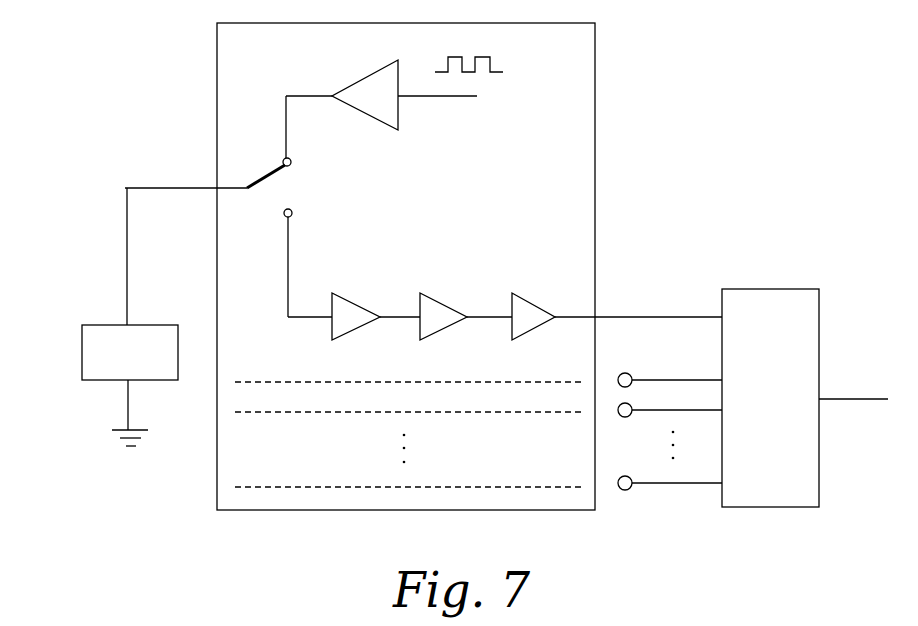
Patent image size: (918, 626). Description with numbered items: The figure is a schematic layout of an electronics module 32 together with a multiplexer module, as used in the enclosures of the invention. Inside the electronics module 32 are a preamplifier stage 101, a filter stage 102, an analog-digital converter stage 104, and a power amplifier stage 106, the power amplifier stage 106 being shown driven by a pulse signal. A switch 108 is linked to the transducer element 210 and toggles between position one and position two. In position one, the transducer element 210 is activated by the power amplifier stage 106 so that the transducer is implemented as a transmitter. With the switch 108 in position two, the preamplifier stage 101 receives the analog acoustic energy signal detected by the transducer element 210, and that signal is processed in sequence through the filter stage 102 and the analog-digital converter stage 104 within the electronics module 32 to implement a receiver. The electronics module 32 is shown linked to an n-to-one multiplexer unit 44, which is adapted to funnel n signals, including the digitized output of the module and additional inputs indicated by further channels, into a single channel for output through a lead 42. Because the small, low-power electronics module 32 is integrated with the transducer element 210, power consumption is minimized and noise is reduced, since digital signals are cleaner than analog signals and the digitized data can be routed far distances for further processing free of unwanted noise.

The electronics module 32 is at (655, 70).
The power amplifier stage 106 is at (372, 72).
The switch 108 is at (282, 178).
The preamplifier stage 101 is at (352, 302).
The filter stage 102 is at (441, 302).
The analog-digital converter (ADC) stage 104 is at (530, 297).
The n-to-1 multiplexer (MUX) unit 44 is at (772, 287).
The lead 42 is at (852, 396).
The transducer element 210 is at (80, 355).